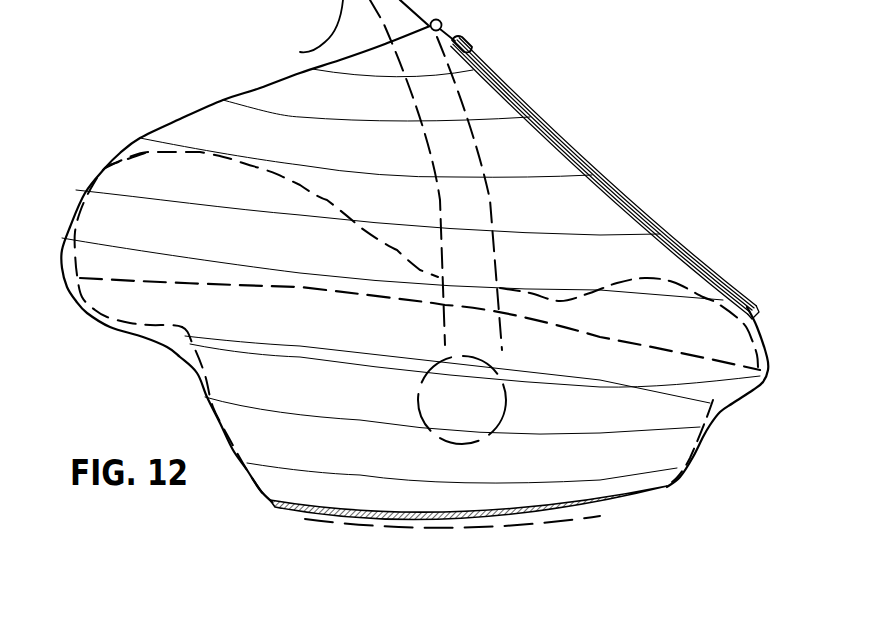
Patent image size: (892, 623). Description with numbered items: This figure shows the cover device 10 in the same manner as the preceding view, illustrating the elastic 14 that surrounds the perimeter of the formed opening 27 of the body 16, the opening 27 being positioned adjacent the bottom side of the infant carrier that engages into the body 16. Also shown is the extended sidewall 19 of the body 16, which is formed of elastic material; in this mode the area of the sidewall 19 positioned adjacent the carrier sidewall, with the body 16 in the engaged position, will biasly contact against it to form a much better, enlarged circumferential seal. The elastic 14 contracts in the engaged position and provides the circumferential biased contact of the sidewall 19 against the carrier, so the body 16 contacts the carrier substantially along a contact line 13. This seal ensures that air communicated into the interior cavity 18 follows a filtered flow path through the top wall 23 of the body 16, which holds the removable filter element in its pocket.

The cover device 10 is at (610, 105).
The contact line 13 is at (133, 277).
The elastic 14 is at (300, 510).
The body 16 is at (667, 223).
The interior cavity 18 is at (406, 208).
The sidewall 19 is at (277, 370).
The top wall 23 is at (504, 92).
The opening 27 is at (602, 510).